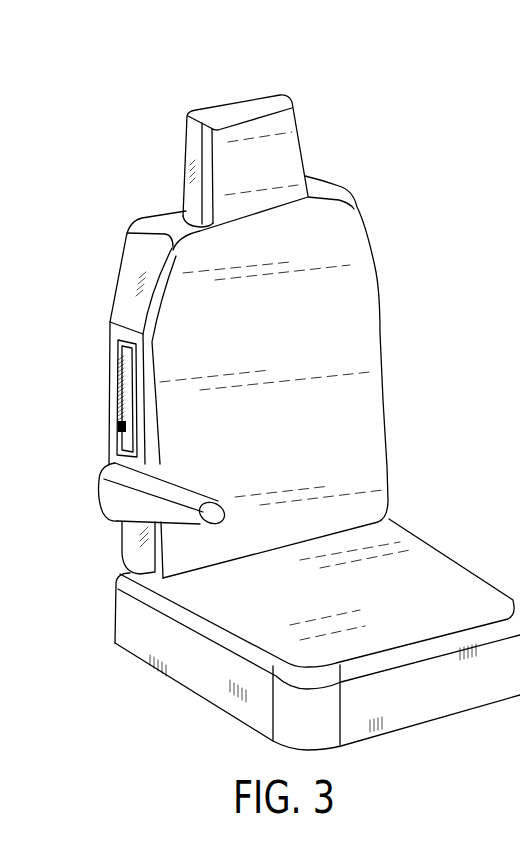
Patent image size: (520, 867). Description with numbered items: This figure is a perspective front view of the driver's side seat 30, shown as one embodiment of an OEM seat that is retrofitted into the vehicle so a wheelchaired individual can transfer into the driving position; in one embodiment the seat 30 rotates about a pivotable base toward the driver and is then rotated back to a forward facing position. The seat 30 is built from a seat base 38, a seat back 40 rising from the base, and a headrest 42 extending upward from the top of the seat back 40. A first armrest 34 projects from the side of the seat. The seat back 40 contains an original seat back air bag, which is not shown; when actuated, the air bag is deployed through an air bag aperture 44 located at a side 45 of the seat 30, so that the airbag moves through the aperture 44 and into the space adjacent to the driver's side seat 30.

The driver's side seat 30 is at (428, 104).
The first armrest 34 is at (107, 503).
The seat base 38 is at (453, 580).
The seat back 40 is at (362, 314).
The headrest 42 is at (228, 112).
The air bag aperture 44 is at (130, 363).
The side 45 is at (130, 425).